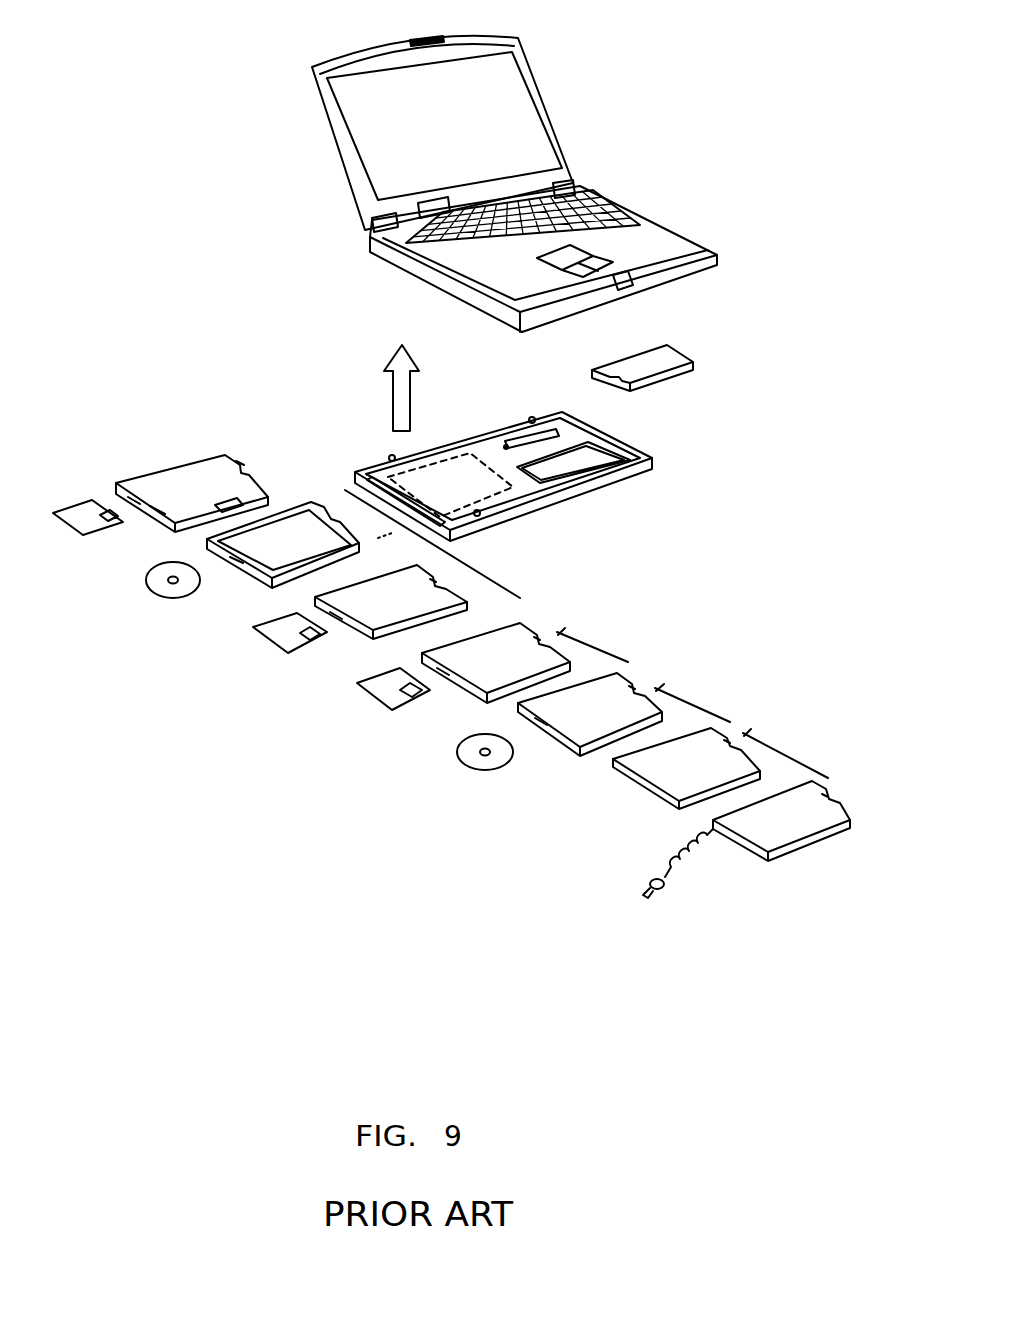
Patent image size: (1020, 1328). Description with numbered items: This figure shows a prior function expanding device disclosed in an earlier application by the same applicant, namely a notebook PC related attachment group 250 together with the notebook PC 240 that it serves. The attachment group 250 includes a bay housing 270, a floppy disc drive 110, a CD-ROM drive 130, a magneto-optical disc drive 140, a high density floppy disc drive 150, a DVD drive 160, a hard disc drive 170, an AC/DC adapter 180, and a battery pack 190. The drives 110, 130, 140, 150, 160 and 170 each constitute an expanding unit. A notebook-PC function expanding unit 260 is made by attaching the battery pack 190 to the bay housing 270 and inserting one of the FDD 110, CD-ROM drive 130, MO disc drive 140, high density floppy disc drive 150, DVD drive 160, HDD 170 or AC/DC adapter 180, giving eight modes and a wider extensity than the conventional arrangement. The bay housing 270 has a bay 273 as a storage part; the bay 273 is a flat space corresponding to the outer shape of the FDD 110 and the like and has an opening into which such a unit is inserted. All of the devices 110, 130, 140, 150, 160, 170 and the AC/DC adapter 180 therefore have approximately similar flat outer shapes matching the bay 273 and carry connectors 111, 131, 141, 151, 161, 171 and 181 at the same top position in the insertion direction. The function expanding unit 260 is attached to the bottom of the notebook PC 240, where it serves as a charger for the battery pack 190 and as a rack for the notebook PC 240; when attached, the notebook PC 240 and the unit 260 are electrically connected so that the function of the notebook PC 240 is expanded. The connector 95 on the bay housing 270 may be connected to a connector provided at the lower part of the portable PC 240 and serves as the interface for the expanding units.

The notebook PC related attachment group 250 is at (233, 38).
The notebook PC 240 is at (622, 183).
The notebook-PC function expanding unit 260 is at (460, 334).
The bay housing 270 is at (457, 427).
The bay 273 is at (475, 503).
The connector 95 is at (542, 427).
The battery pack 190 is at (687, 385).
The floppy disc drive 110 is at (195, 460).
The connector 111 is at (243, 467).
The CD-ROM drive 130 is at (287, 503).
The connector 131 is at (203, 547).
The magneto-optical disc drive 140 is at (453, 587).
The connector 141 is at (437, 580).
The high density floppy disc drive 150 is at (523, 613).
The connector 151 is at (540, 626).
The DVD drive 160 is at (640, 680).
The connector 161 is at (633, 673).
The hard disc drive 170 is at (733, 728).
The connector 171 is at (730, 727).
The AC/DC adapter 180 is at (800, 778).
The connector 181 is at (832, 787).